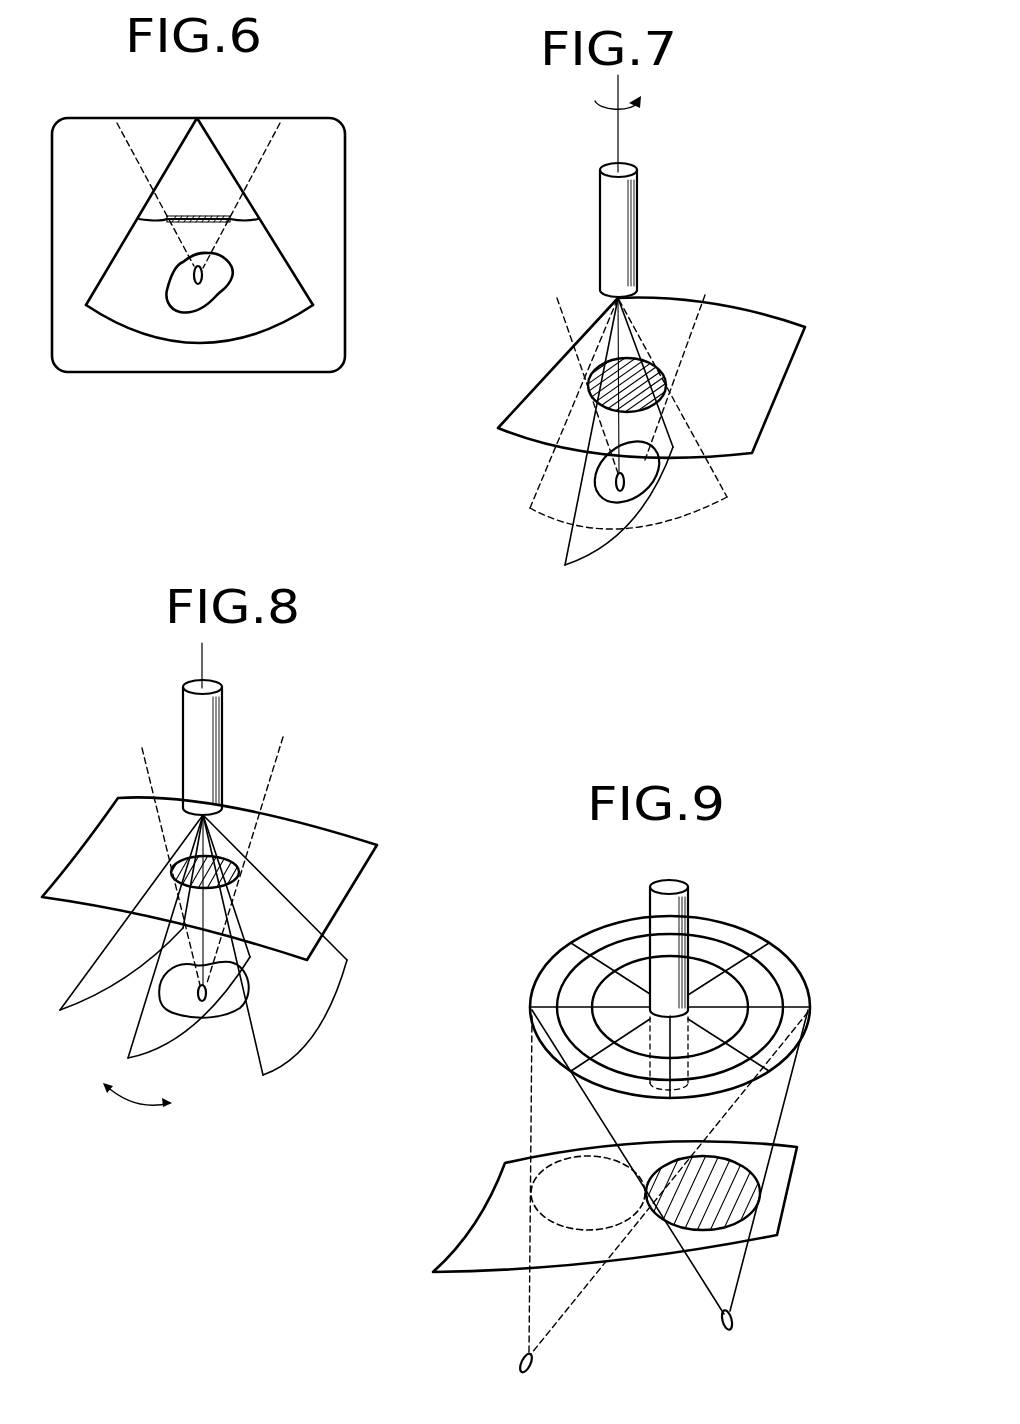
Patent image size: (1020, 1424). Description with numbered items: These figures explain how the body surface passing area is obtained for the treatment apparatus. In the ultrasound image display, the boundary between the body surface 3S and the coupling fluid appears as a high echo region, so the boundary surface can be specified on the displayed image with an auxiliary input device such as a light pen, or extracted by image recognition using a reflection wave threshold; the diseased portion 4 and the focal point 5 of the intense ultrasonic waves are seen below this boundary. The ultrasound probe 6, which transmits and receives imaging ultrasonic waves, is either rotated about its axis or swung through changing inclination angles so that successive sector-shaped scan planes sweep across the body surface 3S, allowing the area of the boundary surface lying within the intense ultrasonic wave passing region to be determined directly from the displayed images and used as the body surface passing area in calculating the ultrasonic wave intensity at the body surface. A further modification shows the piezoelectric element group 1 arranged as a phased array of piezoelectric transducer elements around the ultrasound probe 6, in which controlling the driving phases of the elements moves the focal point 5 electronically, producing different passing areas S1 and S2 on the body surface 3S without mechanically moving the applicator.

In FIG. 9, the piezoelectric element group 1 is at (782, 970).
In FIG. 6, the body surface 3S is at (248, 220).
In FIG. 7, the body surface 3S is at (770, 326).
In FIG. 8, the body surface 3S is at (357, 810).
In FIG. 9, the body surface 3S is at (780, 1158).
In FIG. 6, the diseased portion 4 is at (232, 283).
In FIG. 7, the diseased portion 4 is at (632, 501).
In FIG. 8, the diseased portion 4 is at (237, 1013).
In FIG. 6, the focal point 5 is at (192, 277).
In FIG. 7, the focal point 5 is at (612, 486).
In FIG. 8, the focal point 5 is at (197, 996).
In FIG. 9, the focal point 5 is at (733, 1320).
In FIG. 7, the ultrasound probe 6 is at (638, 193).
In FIG. 8, the ultrasound probe 6 is at (225, 707).
In FIG. 9, the ultrasound probe 6 is at (690, 907).
In FIG. 9, the first scanning plane section S1 is at (735, 1157).
In FIG. 9, the second scanning plane section S2 is at (563, 1157).